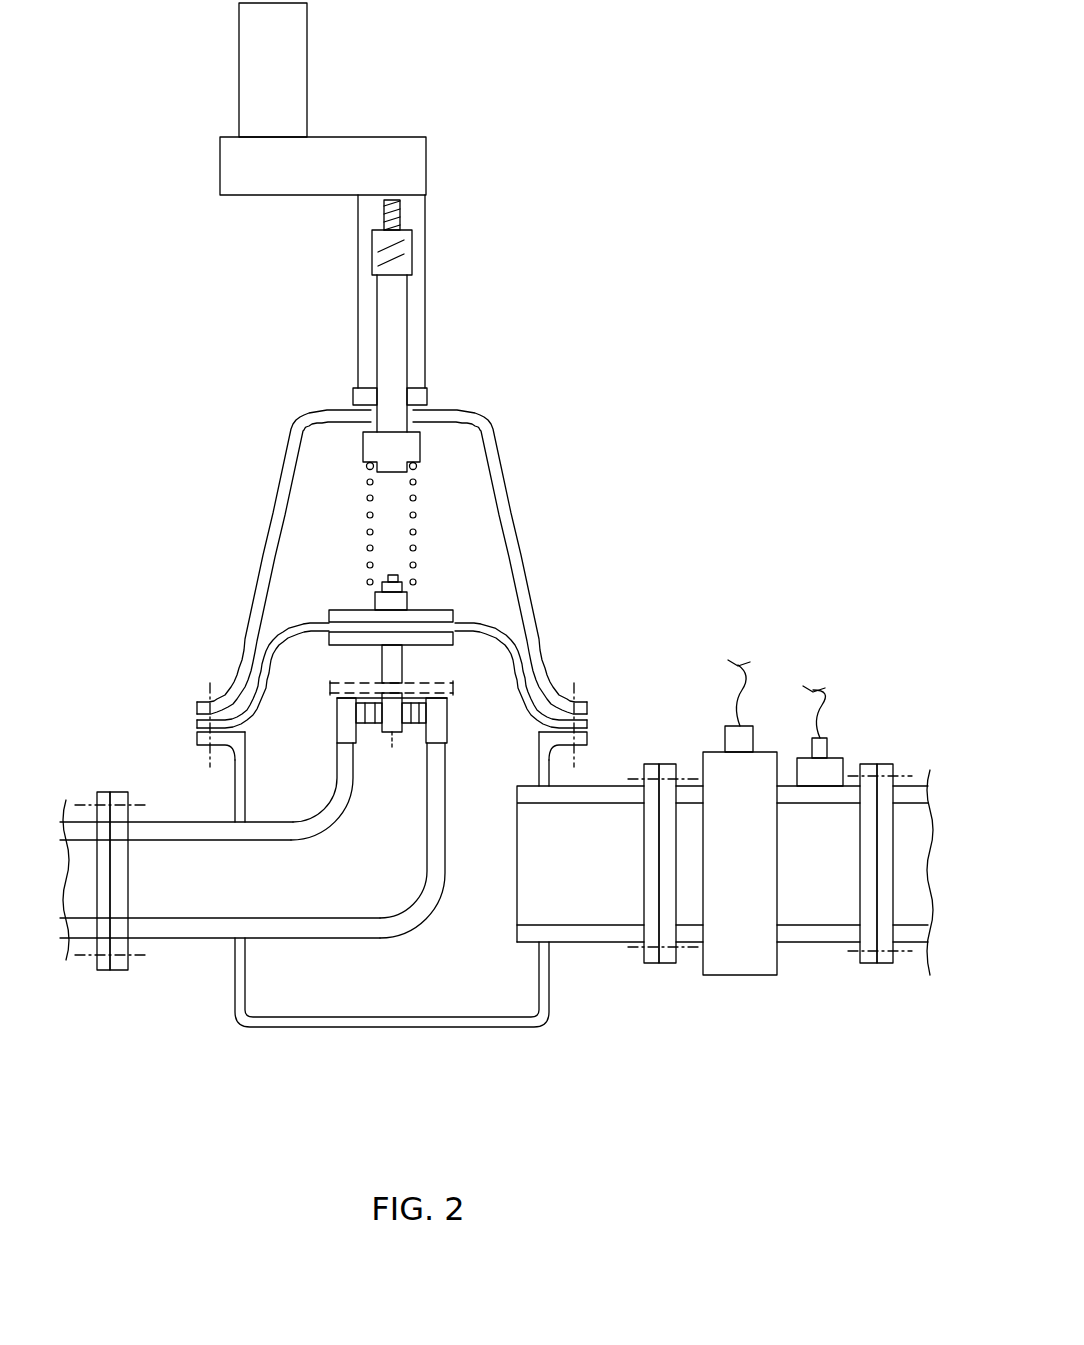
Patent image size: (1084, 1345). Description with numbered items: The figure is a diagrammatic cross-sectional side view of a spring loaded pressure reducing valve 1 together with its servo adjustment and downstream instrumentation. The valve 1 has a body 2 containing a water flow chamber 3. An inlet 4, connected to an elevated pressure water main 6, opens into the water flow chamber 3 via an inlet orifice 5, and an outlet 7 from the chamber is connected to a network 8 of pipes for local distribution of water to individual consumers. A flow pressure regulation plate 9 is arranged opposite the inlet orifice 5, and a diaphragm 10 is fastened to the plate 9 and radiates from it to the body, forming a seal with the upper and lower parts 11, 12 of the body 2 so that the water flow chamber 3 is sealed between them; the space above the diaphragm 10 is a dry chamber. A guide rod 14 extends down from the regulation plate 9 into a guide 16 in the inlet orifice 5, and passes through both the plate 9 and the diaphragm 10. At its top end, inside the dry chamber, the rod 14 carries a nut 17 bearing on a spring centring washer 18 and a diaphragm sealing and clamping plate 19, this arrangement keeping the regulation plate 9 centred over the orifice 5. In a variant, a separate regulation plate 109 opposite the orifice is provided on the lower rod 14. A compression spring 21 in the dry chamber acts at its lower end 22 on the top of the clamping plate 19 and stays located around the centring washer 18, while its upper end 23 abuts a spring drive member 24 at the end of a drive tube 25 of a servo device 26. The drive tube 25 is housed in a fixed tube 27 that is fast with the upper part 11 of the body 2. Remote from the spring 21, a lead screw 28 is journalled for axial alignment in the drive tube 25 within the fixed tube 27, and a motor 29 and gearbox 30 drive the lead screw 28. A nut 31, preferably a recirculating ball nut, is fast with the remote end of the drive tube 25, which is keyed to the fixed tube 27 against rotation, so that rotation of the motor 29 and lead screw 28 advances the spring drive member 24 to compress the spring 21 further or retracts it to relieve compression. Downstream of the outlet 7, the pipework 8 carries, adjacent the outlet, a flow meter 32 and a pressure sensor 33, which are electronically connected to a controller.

The pressure reducing valve 1 is at (673, 388).
The body 2 is at (548, 545).
The water flow chamber 3 is at (303, 688).
The inlet 4 is at (177, 930).
The inlet orifice 5 is at (234, 784).
The elevated pressure water main 6 is at (80, 830).
The outlet 7 is at (620, 943).
The network of pipes 8 is at (905, 797).
The flow pressure regulation plate 9 is at (455, 636).
The diaphragm 10 is at (297, 625).
The upper part 11 is at (283, 495).
The lower part 12 is at (240, 1020).
The guide rod 14 is at (394, 745).
The guide 16 is at (370, 728).
The nut 17 is at (416, 596).
The spring centring washer 18 is at (518, 506).
The diaphragm sealing and clamping plate 19 is at (455, 614).
The compression spring 21 is at (414, 472).
The lower end 22 is at (358, 600).
The upper end 23 is at (402, 445).
The spring drive member 24 is at (447, 410).
The drive tube 25 is at (392, 300).
The servo device 26 is at (460, 100).
The fixed tube 27 is at (425, 287).
The lead screw 28 is at (400, 213).
The motor 29 is at (256, 85).
The gearbox 30 is at (307, 182).
The nut 31 is at (372, 247).
The flow meter 32 is at (743, 942).
The pressure sensor 33 is at (830, 767).
The separate regulation plate 109 is at (455, 688).